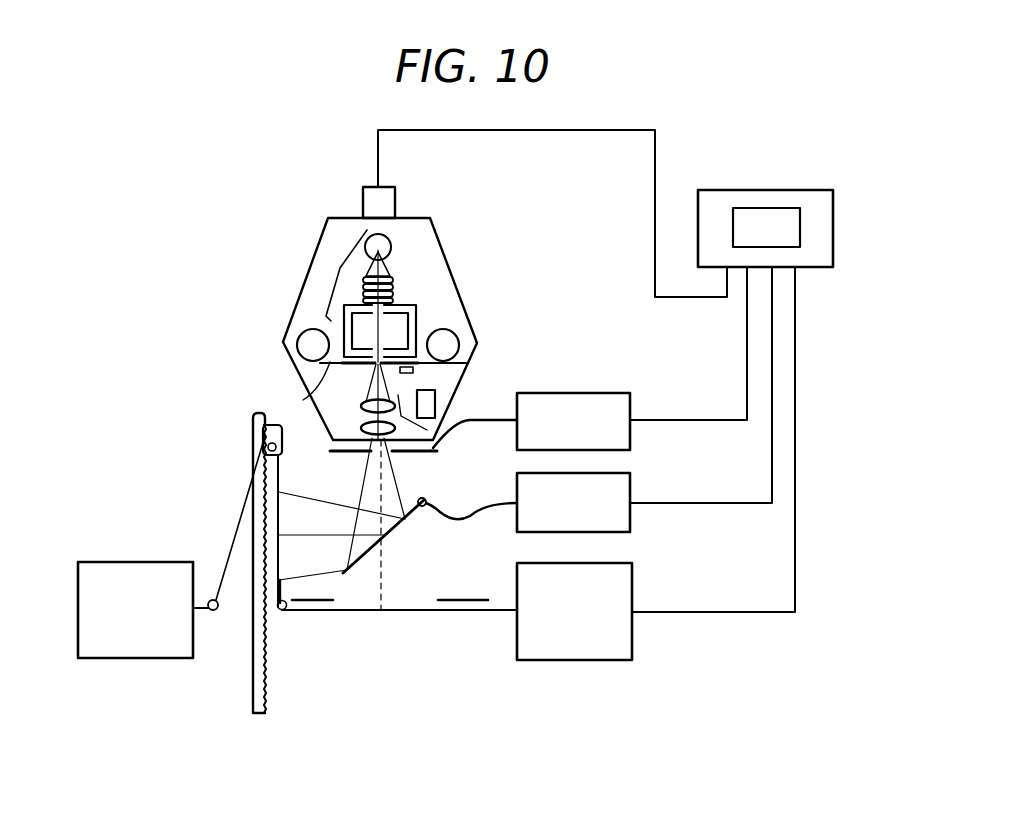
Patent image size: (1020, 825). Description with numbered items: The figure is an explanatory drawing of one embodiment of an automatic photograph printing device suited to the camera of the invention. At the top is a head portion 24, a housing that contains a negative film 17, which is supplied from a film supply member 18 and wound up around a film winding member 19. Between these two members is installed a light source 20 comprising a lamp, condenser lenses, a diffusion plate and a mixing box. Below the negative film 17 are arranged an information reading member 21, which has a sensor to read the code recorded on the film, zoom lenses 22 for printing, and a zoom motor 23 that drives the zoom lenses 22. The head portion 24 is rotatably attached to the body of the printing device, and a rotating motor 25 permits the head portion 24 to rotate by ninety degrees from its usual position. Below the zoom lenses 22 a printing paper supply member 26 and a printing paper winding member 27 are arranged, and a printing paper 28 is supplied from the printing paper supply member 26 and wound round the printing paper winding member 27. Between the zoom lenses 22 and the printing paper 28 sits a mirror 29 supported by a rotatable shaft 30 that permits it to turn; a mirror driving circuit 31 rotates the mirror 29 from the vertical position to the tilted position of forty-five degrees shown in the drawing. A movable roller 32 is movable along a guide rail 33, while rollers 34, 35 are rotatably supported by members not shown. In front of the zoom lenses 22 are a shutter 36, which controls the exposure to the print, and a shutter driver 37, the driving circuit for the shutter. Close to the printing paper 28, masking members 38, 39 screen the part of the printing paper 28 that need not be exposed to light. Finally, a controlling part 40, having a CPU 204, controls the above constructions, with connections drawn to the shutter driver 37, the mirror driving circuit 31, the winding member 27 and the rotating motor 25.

The negative film 17 is at (309, 399).
The film supply member 18 is at (300, 335).
The film winding member 19 is at (457, 332).
The light source 20 is at (337, 268).
The information reading member 21 is at (415, 370).
The zoom lenses 22 is at (362, 419).
The zoom motor 23 is at (435, 398).
The head portion 24 is at (458, 270).
The rotating motor 25 is at (394, 194).
The printing paper supply member 26 is at (143, 561).
The printing paper winding member 27 is at (633, 583).
The printing paper 28 is at (427, 612).
The mirror 29 is at (390, 537).
The rotatable shaft 30 is at (427, 497).
The mirror driving circuit 31 is at (632, 485).
The movable roller 32 is at (278, 425).
The guide rail 33 is at (266, 713).
The roller 34 is at (317, 612).
The roller 35 is at (214, 611).
The shutter 36 is at (440, 452).
The shutter driver 37 is at (587, 393).
The masking member 38 is at (464, 597).
The masking member 39 is at (281, 463).
The controlling part 40 is at (833, 237).
The CPU 204 is at (743, 208).